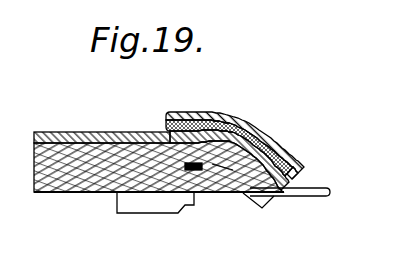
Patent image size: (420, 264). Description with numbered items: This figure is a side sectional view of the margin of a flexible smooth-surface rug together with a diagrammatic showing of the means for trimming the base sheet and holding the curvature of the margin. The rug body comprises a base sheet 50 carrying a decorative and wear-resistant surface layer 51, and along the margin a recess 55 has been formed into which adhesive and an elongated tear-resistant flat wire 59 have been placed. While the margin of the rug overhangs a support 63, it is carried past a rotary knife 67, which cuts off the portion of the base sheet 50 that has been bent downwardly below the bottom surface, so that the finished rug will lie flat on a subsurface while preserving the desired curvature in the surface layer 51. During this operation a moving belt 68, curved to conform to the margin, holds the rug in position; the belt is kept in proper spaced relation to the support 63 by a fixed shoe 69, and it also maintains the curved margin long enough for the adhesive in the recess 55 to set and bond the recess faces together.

The base sheet 50 is at (58, 191).
The decorative and wear-resistant surface layer 51 is at (84, 129).
The recess 55 is at (233, 170).
The flat wire 59 is at (193, 163).
The support 63 is at (153, 202).
The rotary knife 67 is at (307, 196).
The moving belt 68 is at (298, 156).
The fixed shoe 69 is at (270, 131).